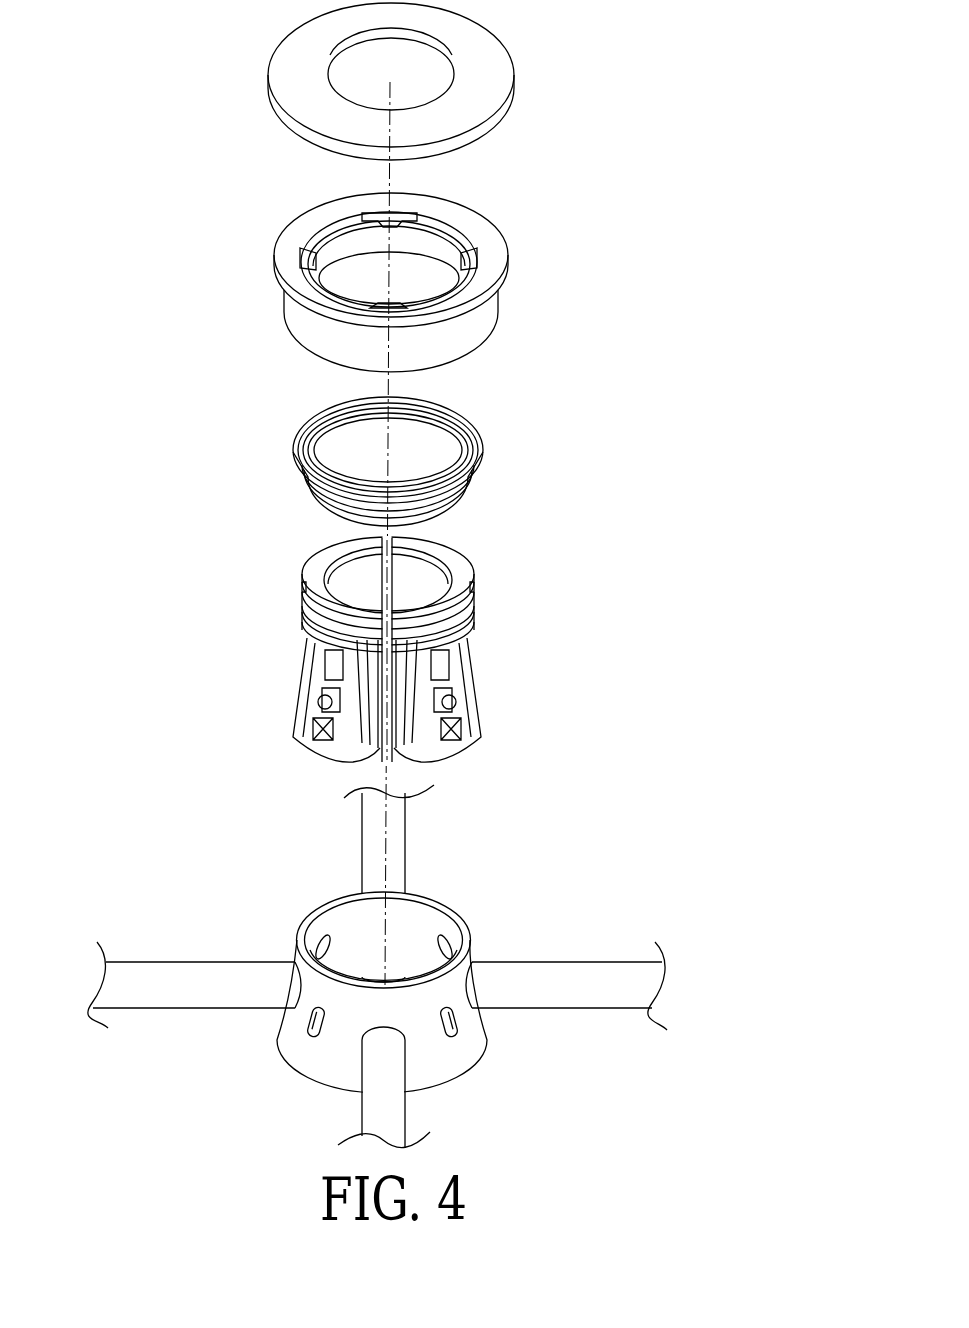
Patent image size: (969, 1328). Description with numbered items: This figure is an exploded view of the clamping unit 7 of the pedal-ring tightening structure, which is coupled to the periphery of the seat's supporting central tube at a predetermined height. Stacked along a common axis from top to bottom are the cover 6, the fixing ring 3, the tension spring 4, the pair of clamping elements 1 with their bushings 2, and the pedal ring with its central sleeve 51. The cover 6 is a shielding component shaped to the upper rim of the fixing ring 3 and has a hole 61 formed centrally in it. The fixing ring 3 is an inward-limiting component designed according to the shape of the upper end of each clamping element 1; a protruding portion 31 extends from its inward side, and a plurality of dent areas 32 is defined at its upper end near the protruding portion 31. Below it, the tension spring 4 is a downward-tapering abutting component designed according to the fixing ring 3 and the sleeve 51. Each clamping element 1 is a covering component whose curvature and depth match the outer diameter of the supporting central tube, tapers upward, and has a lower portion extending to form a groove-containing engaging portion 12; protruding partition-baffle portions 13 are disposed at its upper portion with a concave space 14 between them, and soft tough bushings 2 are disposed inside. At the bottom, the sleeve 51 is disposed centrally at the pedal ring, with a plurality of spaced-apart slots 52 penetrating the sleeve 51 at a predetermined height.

The clamping element 1 is at (384, 641).
The groove-containing engaging portion 12 is at (320, 702).
The partition-baffle portion 13 is at (307, 603).
The space 14 is at (305, 622).
The bushing 2 is at (417, 593).
The fixing ring 3 is at (393, 259).
The protruding portion 31 is at (336, 250).
The dent area 32 is at (455, 243).
The tension spring 4 is at (477, 435).
The sleeve 51 is at (463, 1048).
The slot 52 is at (313, 1036).
The cover 6 is at (377, 515).
The hole 61 is at (425, 65).
The clamping unit 7 is at (598, 474).